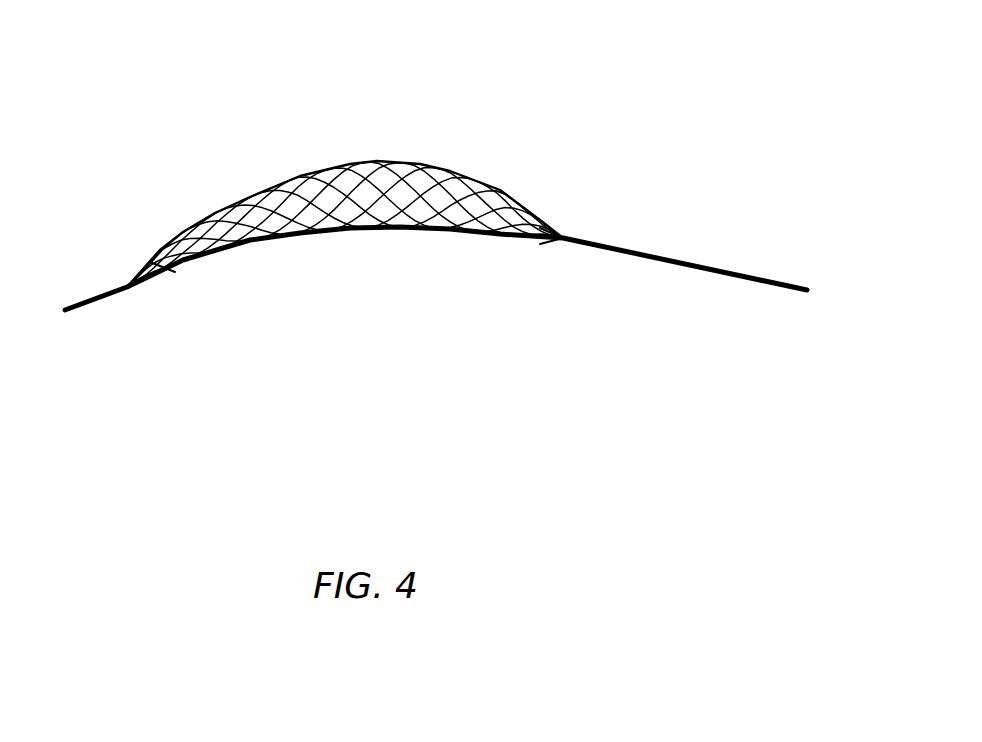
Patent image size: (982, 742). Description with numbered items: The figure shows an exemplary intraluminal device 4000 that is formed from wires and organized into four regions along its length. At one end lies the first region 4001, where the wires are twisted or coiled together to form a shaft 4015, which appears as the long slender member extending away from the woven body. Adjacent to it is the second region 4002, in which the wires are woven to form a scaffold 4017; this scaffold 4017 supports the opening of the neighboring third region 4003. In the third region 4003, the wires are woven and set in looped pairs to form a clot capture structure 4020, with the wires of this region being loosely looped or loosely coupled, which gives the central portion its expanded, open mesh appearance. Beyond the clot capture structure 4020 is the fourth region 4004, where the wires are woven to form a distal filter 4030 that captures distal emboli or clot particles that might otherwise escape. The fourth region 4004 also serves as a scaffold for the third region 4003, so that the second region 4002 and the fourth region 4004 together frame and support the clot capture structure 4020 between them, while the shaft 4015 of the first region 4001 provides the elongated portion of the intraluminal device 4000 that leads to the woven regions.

The intraluminal device 4000 is at (372, 116).
The clot capture structure 4020 is at (428, 167).
The shaft 4015 is at (707, 288).
The scaffold 4017 is at (530, 238).
The distal filter 4030 is at (163, 270).
The first region 4001 is at (682, 202).
The second region 4002 is at (558, 169).
The third region 4003 is at (415, 270).
The fourth region 4004 is at (125, 228).